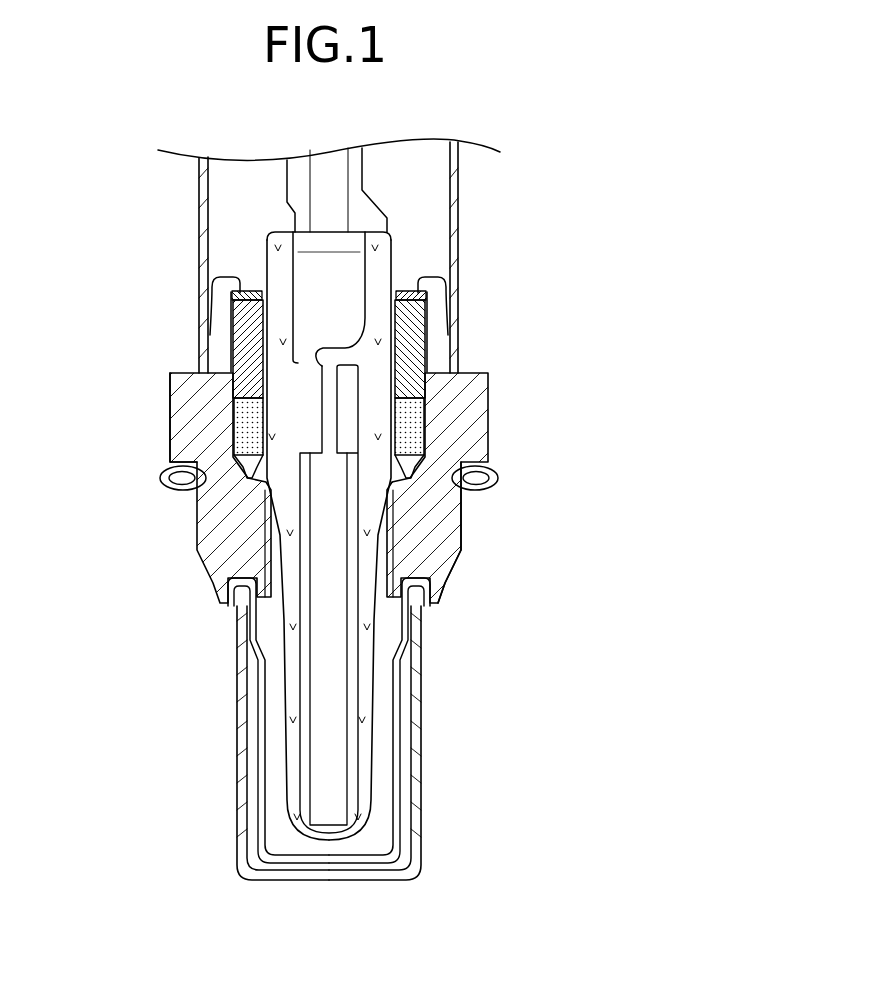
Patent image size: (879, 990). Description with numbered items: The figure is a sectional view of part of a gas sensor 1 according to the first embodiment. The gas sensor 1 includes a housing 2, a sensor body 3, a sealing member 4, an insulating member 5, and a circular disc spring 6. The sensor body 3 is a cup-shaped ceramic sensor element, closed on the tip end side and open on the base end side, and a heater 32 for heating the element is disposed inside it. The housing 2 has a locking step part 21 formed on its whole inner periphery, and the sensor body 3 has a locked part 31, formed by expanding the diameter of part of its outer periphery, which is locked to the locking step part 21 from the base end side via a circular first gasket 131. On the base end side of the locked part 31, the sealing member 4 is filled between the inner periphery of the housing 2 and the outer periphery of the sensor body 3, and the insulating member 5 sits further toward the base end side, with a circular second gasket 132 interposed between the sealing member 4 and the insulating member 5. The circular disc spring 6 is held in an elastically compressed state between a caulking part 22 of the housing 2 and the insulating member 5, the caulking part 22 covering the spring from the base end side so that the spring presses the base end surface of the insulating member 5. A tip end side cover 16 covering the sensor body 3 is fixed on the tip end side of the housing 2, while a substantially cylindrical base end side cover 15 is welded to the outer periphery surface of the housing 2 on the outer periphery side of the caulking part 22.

The gas sensor 1 is at (158, 878).
The housing 2 is at (468, 438).
The first gasket 131 is at (398, 505).
The second gasket 132 is at (225, 392).
The locking step part 21 is at (198, 492).
The caulking part 22 is at (420, 280).
The sensor body 3 is at (292, 697).
The locked part 31 is at (247, 482).
The heater 32 is at (325, 680).
The sealing member 4 is at (240, 432).
The insulating member 5 is at (245, 318).
The circular disc spring 6 is at (400, 290).
The base end side cover 15 is at (202, 238).
The tip end side cover 16 is at (243, 840).